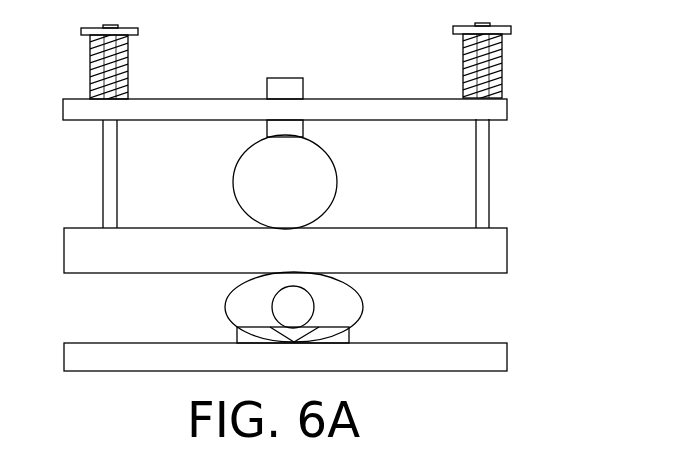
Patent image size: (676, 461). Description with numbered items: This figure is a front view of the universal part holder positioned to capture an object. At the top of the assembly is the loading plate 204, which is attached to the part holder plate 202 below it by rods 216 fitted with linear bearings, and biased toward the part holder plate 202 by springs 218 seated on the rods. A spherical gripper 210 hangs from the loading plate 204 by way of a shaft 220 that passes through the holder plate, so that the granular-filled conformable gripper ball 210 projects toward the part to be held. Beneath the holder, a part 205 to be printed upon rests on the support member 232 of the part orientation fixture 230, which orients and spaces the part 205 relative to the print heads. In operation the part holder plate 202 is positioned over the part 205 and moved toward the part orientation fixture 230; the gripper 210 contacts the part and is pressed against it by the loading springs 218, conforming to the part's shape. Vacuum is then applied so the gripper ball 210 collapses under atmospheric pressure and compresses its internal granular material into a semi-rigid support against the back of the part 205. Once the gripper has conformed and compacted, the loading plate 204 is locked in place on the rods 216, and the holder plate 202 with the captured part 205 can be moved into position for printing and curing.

The part holder plate 202 is at (63, 252).
The loading plate 204 is at (396, 97).
The part 205 is at (363, 305).
The spherical gripper 210 is at (337, 182).
The rod 216 is at (103, 178).
The spring 218 is at (91, 63).
The shaft 220 is at (282, 77).
The part orientation fixture 230 is at (507, 355).
The support member 232 is at (237, 336).